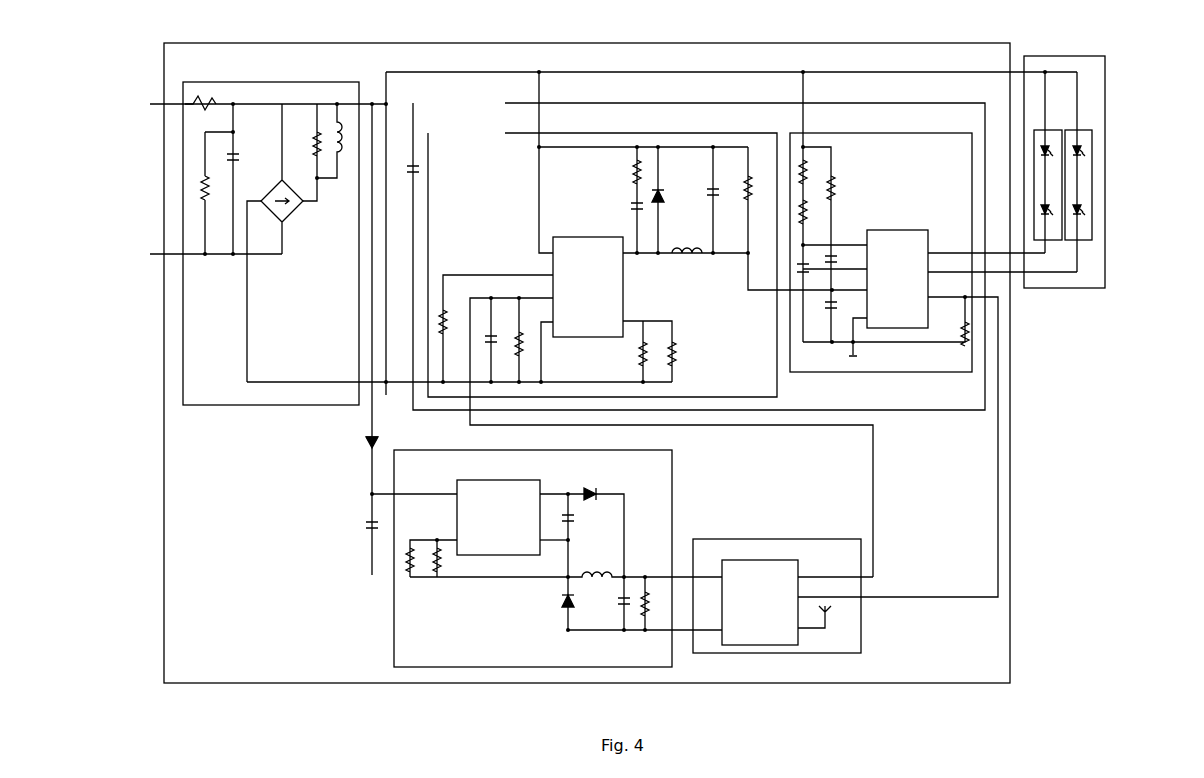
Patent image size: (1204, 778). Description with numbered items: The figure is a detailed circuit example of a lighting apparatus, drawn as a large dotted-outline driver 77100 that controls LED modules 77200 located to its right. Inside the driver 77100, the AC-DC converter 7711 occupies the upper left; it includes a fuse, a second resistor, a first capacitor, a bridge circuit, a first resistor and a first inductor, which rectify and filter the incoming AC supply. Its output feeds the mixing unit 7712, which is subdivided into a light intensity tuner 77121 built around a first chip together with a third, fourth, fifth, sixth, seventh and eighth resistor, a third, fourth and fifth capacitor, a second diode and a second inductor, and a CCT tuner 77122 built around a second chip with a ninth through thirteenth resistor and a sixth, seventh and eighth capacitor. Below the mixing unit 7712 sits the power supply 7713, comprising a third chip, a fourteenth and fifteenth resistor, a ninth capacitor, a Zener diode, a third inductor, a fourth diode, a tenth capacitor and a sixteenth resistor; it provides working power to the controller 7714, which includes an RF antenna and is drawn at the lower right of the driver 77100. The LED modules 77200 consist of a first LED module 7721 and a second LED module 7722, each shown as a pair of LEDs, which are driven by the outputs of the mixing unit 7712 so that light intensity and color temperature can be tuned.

The driver 77100 is at (584, 44).
The AC-DC converter 7711 is at (266, 83).
The mixing unit 7712 is at (712, 88).
The light intensity tuner 77121 is at (602, 134).
The CCT tuner 77122 is at (881, 134).
The power supply 7713 is at (531, 452).
The controller 7714 is at (754, 540).
The LED modules 77200 is at (1061, 57).
The first LED module 7721 is at (1052, 124).
The second LED module 7722 is at (1081, 130).